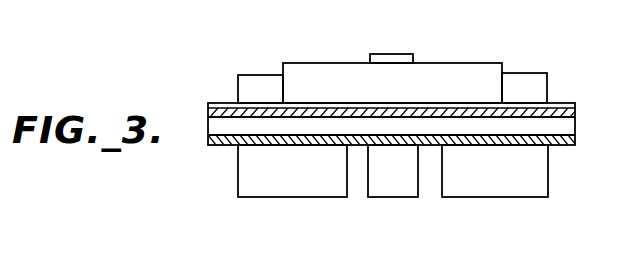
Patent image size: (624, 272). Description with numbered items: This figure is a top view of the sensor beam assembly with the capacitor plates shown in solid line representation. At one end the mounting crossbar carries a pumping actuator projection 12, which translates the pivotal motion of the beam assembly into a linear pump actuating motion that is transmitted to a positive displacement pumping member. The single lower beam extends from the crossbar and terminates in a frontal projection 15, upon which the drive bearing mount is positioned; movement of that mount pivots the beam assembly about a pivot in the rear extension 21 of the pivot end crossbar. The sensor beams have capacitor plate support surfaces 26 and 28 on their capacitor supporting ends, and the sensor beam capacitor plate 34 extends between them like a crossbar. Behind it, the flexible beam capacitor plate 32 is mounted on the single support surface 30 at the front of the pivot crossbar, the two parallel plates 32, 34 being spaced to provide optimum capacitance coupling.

The pumping actuator projection 12 is at (391, 53).
The rear extension 21 is at (413, 84).
The flexible beam capacitor plate 32 is at (575, 121).
The capacitor plate support surface 28 is at (557, 143).
The capacitor plate support surface 30 is at (522, 110).
The capacitor plate support surface 26 is at (267, 147).
The frontal projection 15 is at (393, 182).
The sensor beam capacitor plate 34 is at (227, 145).